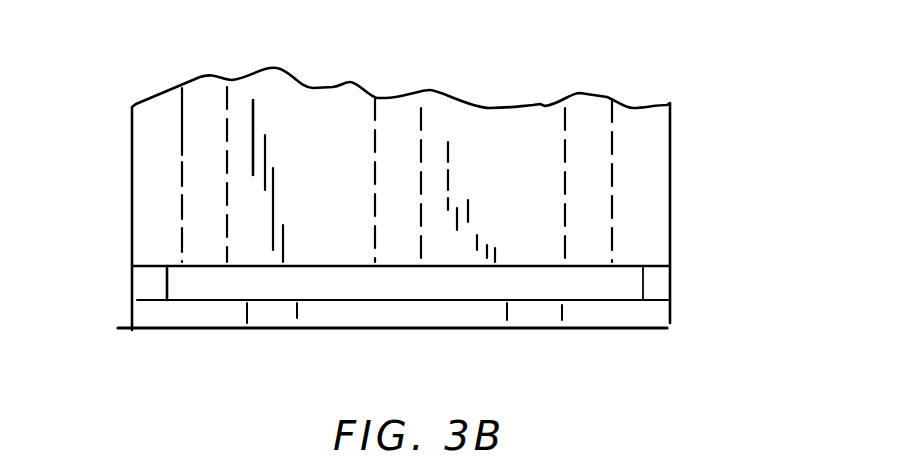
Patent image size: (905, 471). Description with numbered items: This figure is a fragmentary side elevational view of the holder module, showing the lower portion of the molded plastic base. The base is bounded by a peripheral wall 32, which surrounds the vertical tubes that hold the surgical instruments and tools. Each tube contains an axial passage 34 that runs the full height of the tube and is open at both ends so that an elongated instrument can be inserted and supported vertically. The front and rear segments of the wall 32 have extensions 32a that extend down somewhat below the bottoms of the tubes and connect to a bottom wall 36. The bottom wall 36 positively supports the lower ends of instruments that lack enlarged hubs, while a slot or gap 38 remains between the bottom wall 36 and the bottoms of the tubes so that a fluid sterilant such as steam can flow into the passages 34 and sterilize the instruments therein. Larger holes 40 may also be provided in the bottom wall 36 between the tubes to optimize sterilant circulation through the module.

The peripheral wall 32 is at (657, 167).
The wall extension 32a is at (152, 282).
The axial passage 34 is at (180, 120).
The bottom wall 36 is at (638, 318).
The slot or gap 38 is at (588, 290).
The holes 40 is at (298, 312).